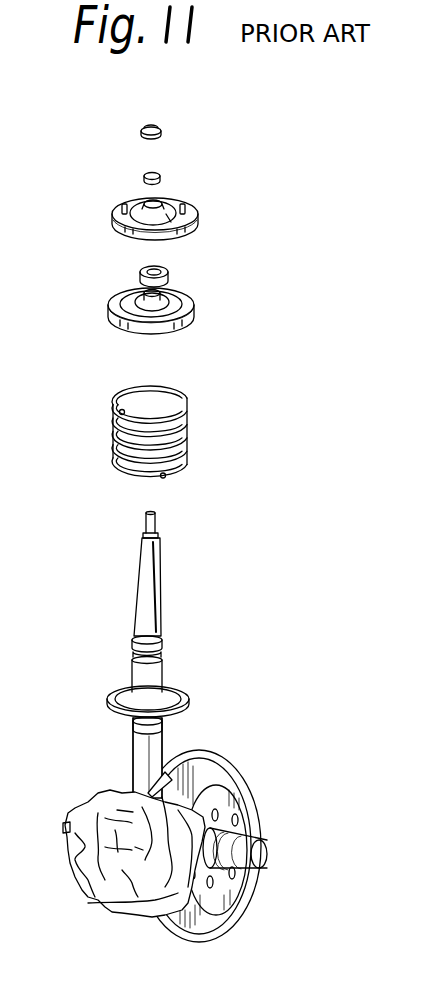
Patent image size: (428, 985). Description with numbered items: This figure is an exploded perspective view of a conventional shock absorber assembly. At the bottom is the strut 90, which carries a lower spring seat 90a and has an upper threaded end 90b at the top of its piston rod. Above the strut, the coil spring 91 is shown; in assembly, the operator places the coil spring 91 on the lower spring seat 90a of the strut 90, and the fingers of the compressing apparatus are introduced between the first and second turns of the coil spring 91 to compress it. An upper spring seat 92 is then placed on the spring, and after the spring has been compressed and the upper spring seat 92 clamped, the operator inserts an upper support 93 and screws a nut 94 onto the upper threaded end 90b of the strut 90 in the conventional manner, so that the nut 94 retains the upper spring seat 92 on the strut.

The strut 90 is at (142, 751).
The lower spring seat 90a is at (108, 698).
The upper threaded end 90b is at (143, 527).
The coil spring 91 is at (113, 413).
The upper spring seat 92 is at (195, 312).
The upper support 93 is at (199, 222).
The nut 94 is at (161, 178).